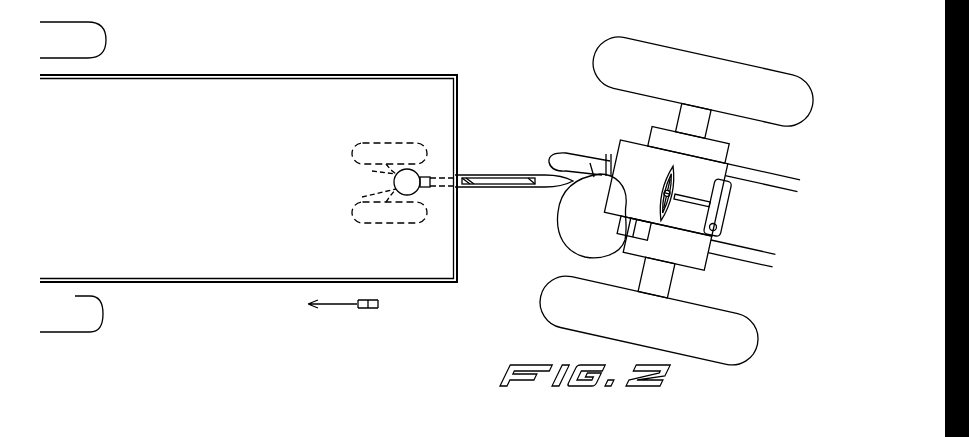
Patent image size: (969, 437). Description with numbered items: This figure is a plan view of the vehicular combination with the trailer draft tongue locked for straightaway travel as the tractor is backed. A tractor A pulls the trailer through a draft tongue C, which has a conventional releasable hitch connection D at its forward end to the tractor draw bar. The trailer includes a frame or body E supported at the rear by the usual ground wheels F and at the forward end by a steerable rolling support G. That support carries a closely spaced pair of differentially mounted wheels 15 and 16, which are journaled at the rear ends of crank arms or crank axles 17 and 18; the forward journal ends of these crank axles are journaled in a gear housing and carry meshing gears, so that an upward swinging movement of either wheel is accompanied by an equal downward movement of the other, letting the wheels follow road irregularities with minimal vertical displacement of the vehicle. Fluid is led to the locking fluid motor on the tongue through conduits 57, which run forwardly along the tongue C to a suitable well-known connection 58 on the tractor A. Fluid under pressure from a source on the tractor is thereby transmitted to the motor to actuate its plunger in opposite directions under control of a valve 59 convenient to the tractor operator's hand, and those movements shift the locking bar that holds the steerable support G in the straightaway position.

The tractor A is at (678, 201).
The draft tongue C is at (514, 184).
The releasable hitch connection D is at (576, 187).
The frame or body E is at (262, 82).
The ground wheels F is at (104, 40).
The steerable rolling support G is at (389, 184).
The wheel 15 is at (402, 223).
The wheel 16 is at (381, 143).
The crank arm or crank axle 17 is at (360, 197).
The crank arm or crank axle 18 is at (372, 172).
The conduits 57 is at (490, 176).
The connection 58 is at (605, 163).
The valve 59 is at (709, 228).